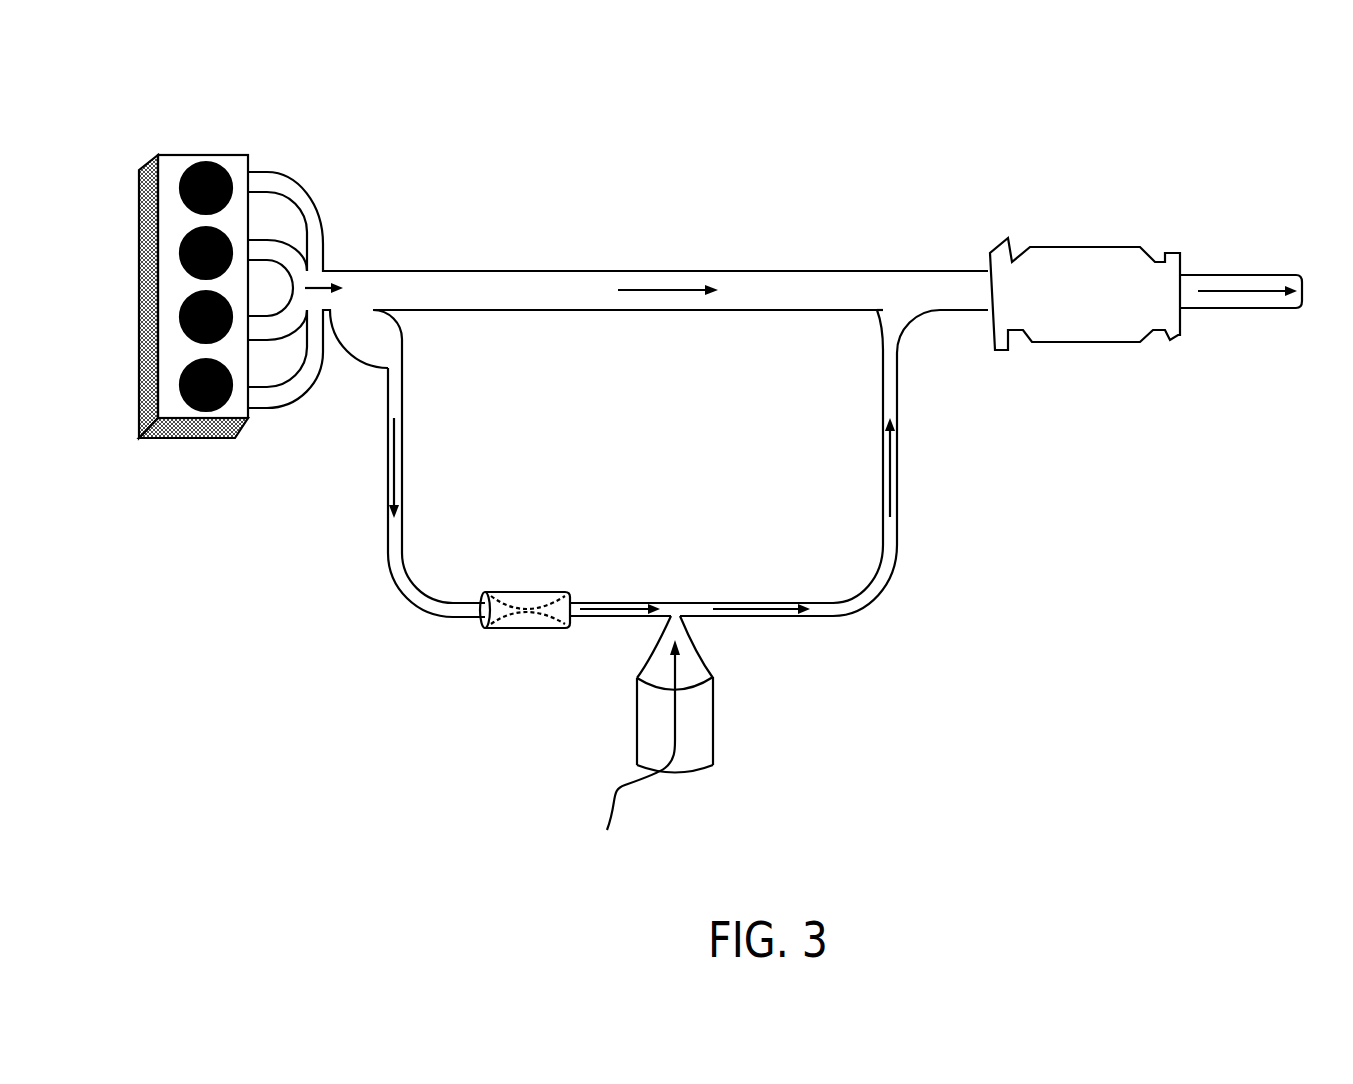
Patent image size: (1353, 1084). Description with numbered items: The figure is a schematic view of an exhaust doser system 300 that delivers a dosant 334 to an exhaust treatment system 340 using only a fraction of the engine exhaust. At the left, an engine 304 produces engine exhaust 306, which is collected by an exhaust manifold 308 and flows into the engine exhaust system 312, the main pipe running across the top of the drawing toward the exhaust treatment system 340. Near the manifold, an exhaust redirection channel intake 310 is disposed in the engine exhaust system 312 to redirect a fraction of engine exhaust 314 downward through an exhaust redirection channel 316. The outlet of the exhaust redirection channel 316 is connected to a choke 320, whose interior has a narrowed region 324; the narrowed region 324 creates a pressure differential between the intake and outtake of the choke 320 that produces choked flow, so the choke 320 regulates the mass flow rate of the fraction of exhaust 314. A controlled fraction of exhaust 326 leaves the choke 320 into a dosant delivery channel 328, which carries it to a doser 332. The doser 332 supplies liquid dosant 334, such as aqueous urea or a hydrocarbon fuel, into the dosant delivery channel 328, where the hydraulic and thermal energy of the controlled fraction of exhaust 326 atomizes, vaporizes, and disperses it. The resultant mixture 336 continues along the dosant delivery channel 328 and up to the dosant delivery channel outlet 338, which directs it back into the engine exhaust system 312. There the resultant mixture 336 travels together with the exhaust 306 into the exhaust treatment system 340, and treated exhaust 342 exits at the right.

The exhaust doser system 300 is at (470, 148).
The engine 304 is at (195, 440).
The engine exhaust 306 is at (324, 251).
The exhaust manifold 308 is at (313, 380).
The exhaust redirection channel intake 310 is at (363, 313).
The engine exhaust system 312 is at (517, 270).
The fraction of engine exhaust 314 is at (397, 470).
The exhaust redirection channel 316 is at (402, 391).
The choke 320 is at (523, 629).
The narrowed region 324 is at (535, 613).
The controlled fraction of exhaust 326 is at (610, 617).
The dosant delivery channel 328 is at (708, 617).
The doser 332 is at (708, 771).
The dosant 334 is at (632, 748).
The resultant mixture 336 is at (890, 478).
The dosant delivery channel outlet 338 is at (922, 308).
The exhaust treatment system 340 is at (1098, 343).
The treated exhaust 342 is at (1243, 309).